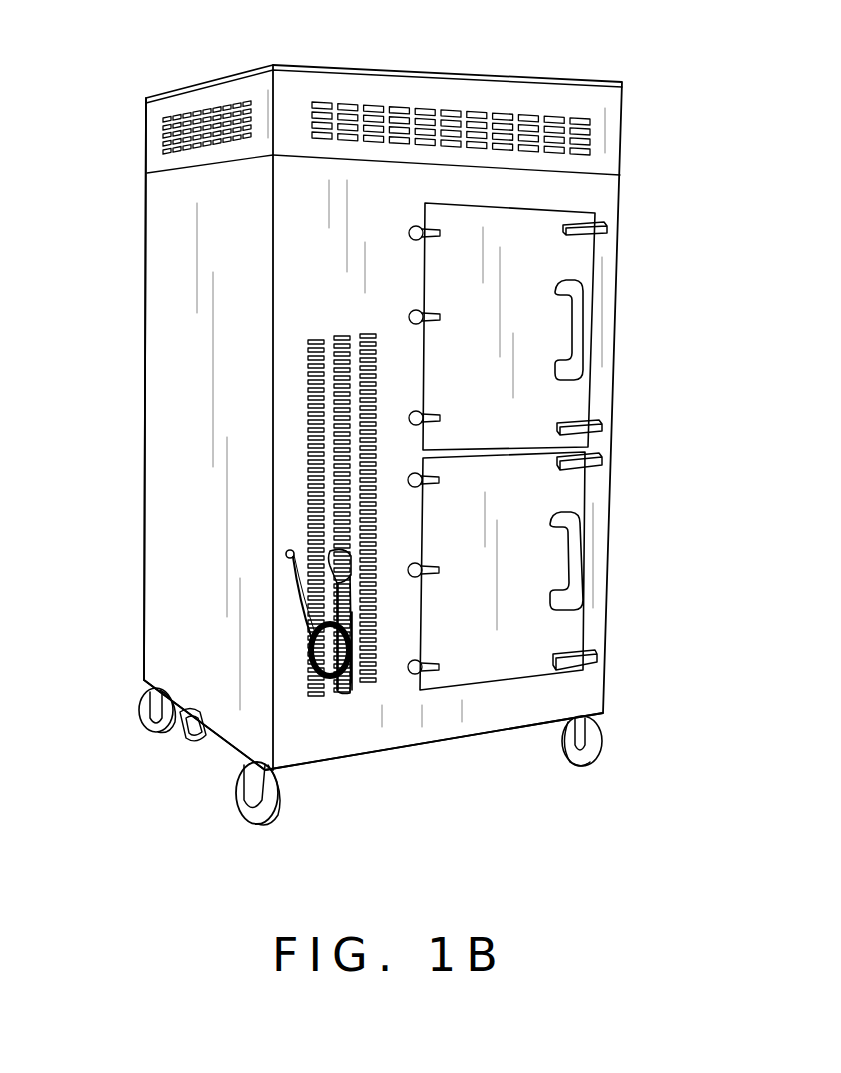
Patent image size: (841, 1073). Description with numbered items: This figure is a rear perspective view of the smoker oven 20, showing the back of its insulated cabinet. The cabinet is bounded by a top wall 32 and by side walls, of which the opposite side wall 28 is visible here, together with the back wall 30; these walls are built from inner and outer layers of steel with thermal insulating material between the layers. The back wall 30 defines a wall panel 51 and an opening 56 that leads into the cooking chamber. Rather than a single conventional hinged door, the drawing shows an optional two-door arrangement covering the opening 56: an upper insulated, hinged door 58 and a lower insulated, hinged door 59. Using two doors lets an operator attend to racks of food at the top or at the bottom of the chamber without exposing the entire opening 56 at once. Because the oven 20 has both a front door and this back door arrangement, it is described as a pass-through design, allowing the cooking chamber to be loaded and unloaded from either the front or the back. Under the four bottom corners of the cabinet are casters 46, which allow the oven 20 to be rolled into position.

The oven 20 is at (110, 97).
The opposite side wall 28 is at (200, 404).
The back wall 30 is at (299, 224).
The top wall 32 is at (355, 70).
The casters 46 is at (268, 815).
The wall panel 51 is at (568, 700).
The opening 56 is at (573, 210).
The upper insulated, hinged door 58 is at (548, 400).
The lower insulated, hinged door 59 is at (536, 500).